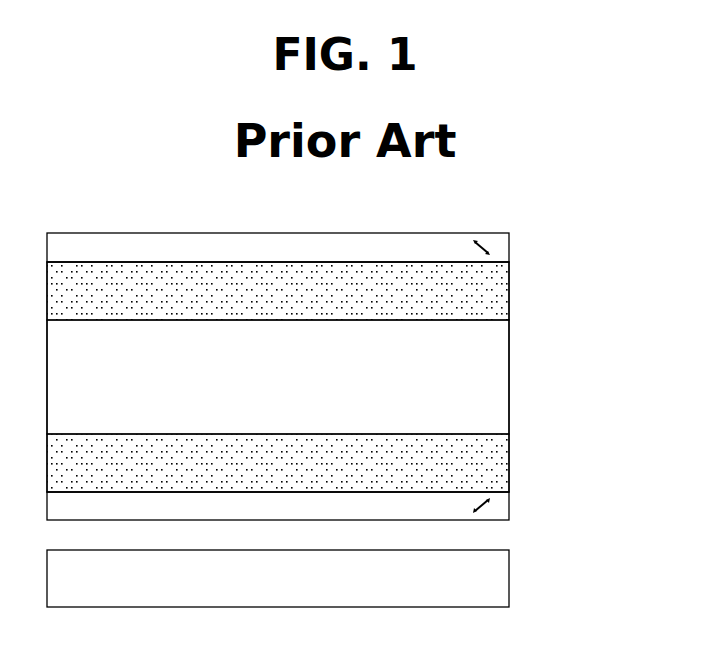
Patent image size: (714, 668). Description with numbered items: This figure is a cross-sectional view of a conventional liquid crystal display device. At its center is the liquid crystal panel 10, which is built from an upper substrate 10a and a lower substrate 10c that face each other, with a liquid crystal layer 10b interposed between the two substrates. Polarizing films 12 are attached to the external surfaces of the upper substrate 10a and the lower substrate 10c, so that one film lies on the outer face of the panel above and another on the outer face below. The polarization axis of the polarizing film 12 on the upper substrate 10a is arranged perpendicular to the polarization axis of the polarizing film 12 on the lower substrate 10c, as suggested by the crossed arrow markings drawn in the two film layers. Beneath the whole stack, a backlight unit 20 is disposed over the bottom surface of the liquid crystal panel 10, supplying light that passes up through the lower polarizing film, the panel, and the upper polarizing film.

The liquid crystal panel 10 is at (602, 290).
The upper substrate 10a is at (505, 289).
The liquid crystal layer 10b is at (505, 374).
The lower substrate 10c is at (505, 461).
The polarizing film 12 is at (505, 246).
The backlight unit 20 is at (505, 577).